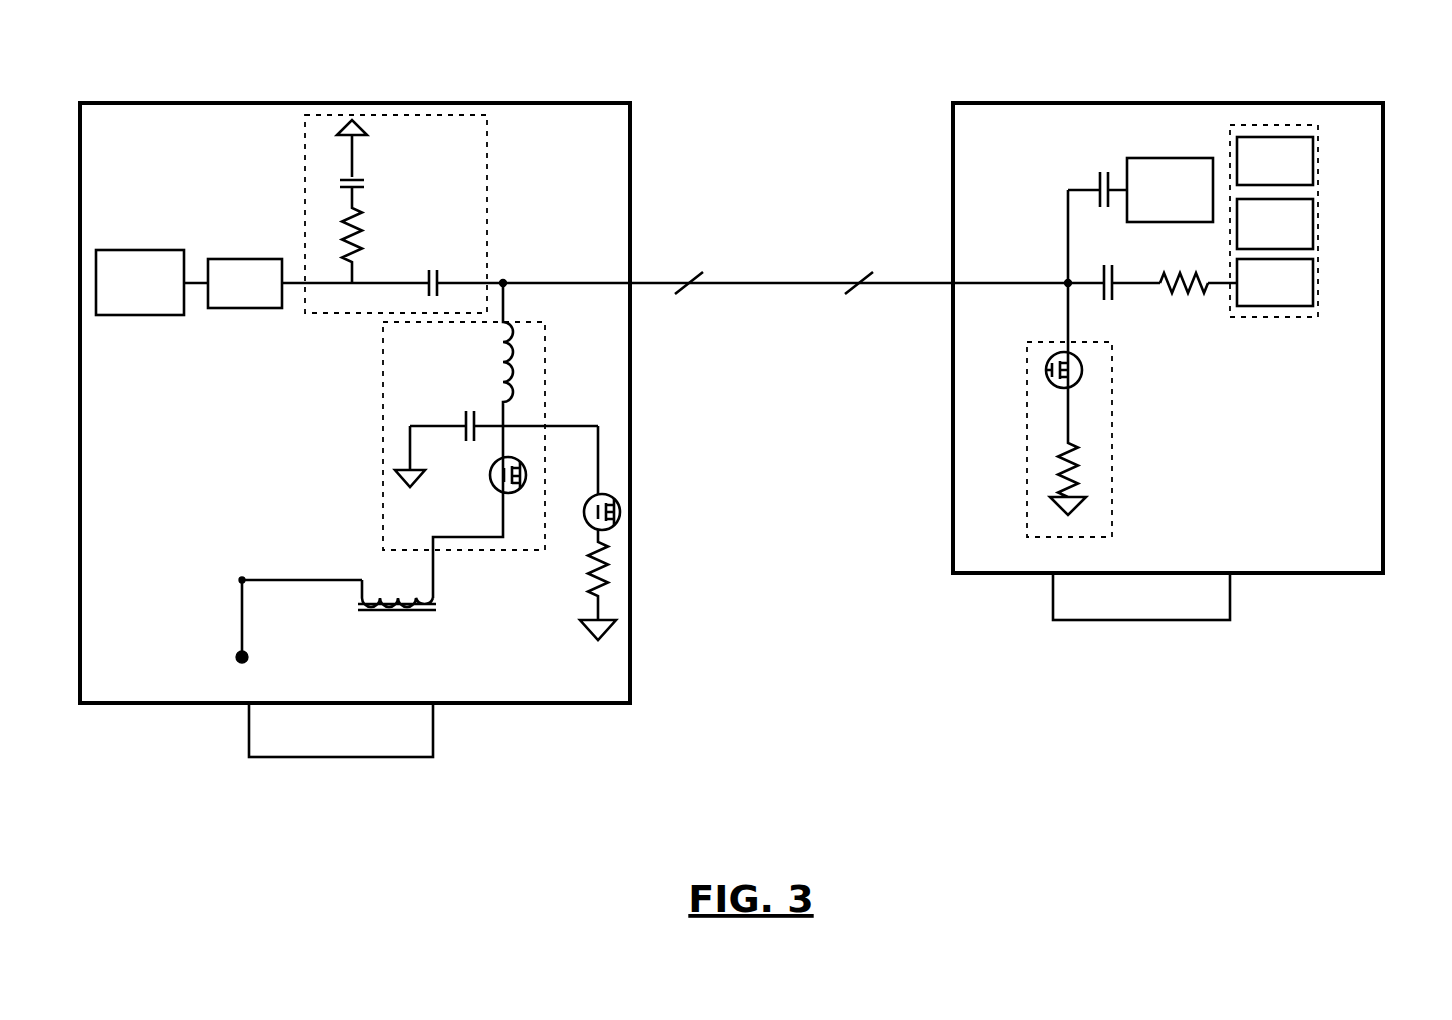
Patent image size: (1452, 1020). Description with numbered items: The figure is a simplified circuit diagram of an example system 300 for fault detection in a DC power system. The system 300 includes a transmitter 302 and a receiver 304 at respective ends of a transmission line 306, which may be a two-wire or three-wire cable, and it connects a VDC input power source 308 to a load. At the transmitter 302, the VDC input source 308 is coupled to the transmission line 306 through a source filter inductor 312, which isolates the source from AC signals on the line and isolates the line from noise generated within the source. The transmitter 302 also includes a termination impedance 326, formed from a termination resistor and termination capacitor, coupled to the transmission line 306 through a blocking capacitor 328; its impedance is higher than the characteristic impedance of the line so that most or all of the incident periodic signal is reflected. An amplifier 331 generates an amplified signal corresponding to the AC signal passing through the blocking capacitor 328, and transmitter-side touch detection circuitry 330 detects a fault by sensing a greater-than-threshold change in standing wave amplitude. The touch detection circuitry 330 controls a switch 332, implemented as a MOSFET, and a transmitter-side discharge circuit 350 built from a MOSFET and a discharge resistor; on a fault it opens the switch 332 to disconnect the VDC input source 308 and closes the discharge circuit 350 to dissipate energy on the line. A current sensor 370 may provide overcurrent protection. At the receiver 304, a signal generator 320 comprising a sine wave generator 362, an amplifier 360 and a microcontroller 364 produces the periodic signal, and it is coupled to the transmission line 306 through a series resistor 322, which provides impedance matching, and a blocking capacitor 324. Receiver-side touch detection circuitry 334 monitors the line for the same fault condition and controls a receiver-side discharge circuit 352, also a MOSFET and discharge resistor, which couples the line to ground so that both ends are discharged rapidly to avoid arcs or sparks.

The system 300 is at (843, 55).
The transmitter 302 is at (228, 103).
The receiver 304 is at (1033, 103).
The transmission line 306 is at (785, 287).
The VDC input power source 308 is at (233, 655).
The source filter inductor 312 is at (553, 362).
The signal generator 320 is at (1290, 317).
The series resistor 322 is at (1190, 330).
The blocking capacitor 324 is at (1118, 315).
The termination impedance 326 is at (318, 220).
The blocking capacitor 328 is at (447, 270).
The transmitter-side touch detection circuitry 330 is at (143, 316).
The amplifier 331 is at (238, 308).
The switch 332 is at (518, 515).
The receiver-side touch detection circuitry 334 is at (1175, 158).
The transmitter-side discharge circuit 350 is at (610, 597).
The receiver-side discharge circuit 352 is at (1007, 436).
The amplifier 360 is at (1300, 305).
The sine wave generator 362 is at (1237, 200).
The microcontroller 364 is at (1298, 128).
The current sensor 370 is at (371, 560).